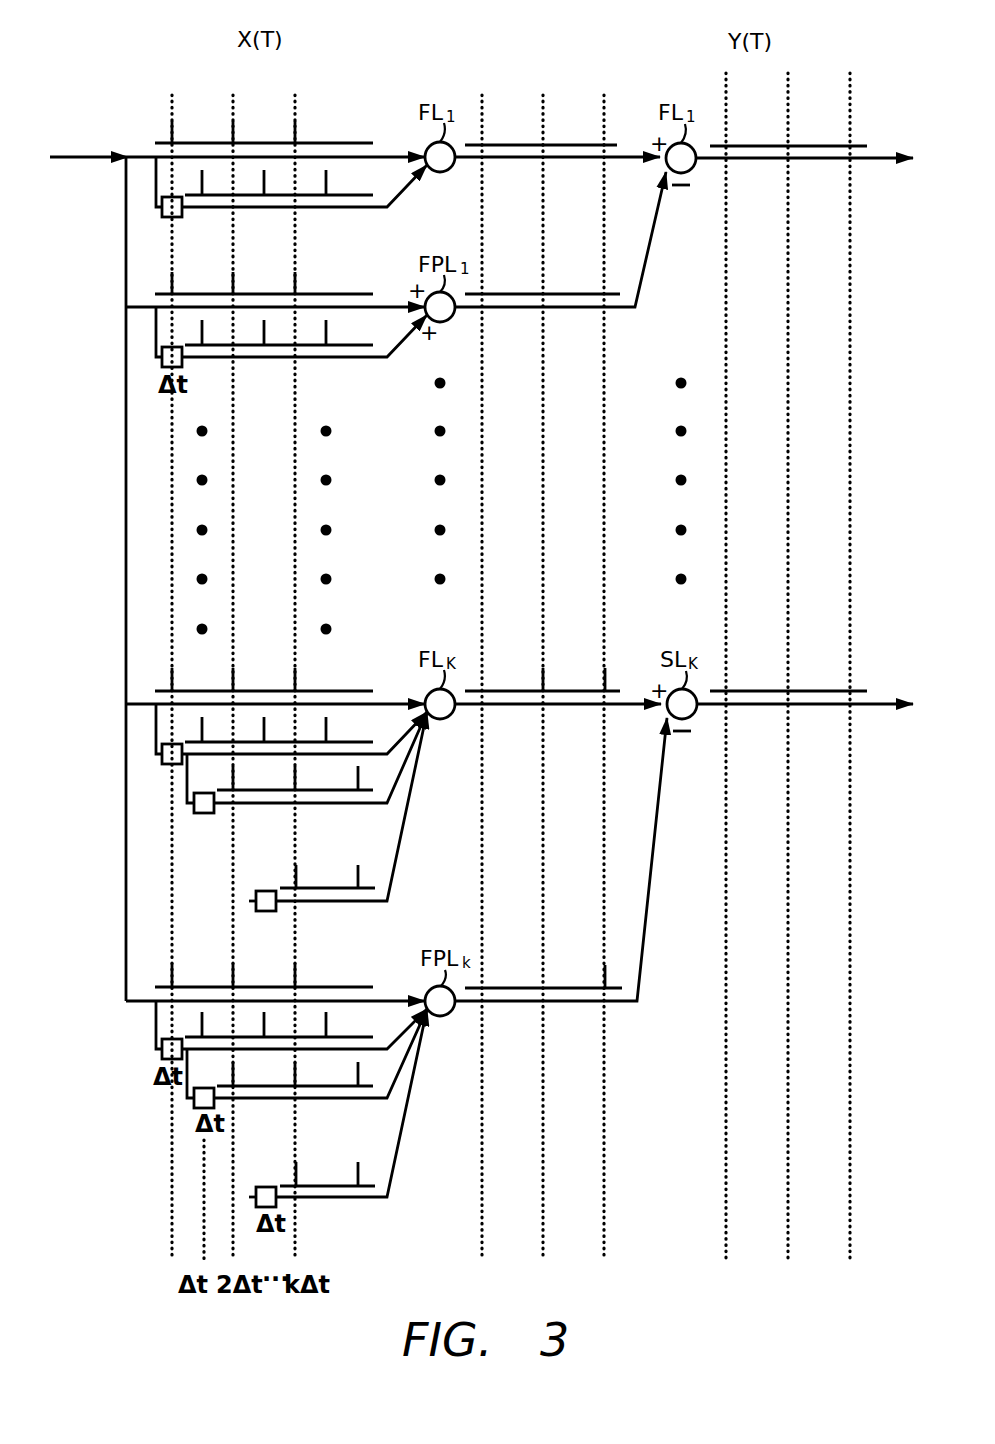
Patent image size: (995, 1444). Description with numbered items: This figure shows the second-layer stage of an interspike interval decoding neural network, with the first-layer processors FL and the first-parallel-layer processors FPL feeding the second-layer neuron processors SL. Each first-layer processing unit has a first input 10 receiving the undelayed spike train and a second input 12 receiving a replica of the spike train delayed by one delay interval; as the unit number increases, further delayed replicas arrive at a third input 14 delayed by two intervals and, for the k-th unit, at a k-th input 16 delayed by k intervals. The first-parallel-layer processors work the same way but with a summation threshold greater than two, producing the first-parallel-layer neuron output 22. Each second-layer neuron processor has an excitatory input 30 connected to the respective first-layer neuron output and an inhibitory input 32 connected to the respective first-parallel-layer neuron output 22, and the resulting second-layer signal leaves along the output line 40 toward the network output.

The first input 10 is at (392, 152).
The second input 12 is at (403, 183).
The third input 14 is at (401, 790).
The k-th input 16 is at (396, 878).
The first-parallel-layer neuron output 22 is at (455, 1010).
The excitatory input 30 is at (632, 153).
The inhibitory input 32 is at (655, 197).
The output line 40 is at (693, 166).